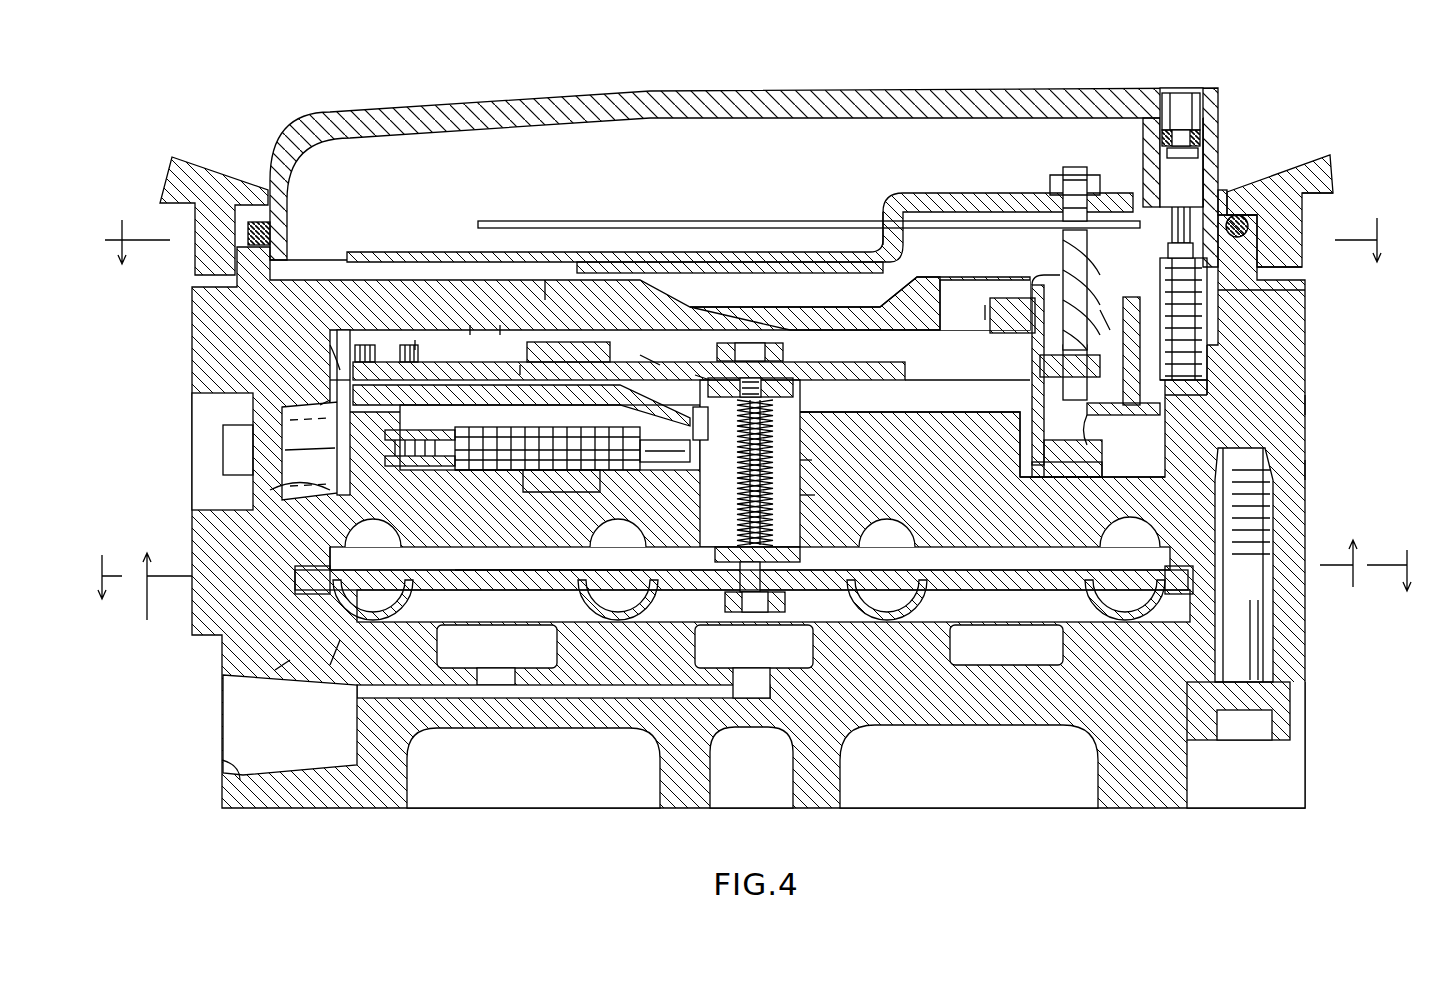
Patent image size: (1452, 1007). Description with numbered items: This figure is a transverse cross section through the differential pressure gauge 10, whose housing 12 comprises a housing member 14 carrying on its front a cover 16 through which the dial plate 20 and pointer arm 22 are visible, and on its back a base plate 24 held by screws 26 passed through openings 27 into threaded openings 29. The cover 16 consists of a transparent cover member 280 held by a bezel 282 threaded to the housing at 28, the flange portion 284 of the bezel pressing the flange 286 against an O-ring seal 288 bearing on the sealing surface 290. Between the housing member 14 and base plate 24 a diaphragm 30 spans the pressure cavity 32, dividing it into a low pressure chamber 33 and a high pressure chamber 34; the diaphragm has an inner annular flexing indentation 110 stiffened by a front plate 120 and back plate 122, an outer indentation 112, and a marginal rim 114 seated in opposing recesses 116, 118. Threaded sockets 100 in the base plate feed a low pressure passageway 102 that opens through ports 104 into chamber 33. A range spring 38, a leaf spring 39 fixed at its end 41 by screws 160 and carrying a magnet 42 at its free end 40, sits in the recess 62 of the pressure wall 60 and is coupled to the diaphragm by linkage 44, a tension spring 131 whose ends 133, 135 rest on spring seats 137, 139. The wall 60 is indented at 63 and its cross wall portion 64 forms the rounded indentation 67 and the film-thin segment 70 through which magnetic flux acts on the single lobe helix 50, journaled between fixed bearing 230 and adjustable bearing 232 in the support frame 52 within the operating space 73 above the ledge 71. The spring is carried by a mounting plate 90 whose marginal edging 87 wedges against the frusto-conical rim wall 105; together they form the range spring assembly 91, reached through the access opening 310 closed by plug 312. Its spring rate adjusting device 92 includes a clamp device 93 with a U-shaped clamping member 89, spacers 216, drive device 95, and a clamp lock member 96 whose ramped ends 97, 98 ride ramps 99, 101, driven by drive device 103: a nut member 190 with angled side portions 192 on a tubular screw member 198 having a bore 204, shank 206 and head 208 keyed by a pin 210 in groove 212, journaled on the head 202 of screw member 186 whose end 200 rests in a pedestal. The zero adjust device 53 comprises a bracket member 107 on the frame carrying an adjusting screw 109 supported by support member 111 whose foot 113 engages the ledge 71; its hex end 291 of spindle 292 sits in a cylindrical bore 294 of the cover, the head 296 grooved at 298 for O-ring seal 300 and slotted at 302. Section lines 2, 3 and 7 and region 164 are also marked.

The differential pressure gauge 10 is at (1300, 810).
The housing 12 is at (1308, 470).
The housing member 14 is at (1308, 405).
The cover 16 is at (1340, 175).
The dial plate 20 is at (590, 221).
The pointer arm 22 is at (640, 252).
The base plate 24 is at (1300, 690).
The screws 26 is at (1255, 616).
The openings 27 is at (1265, 640).
The threaded securement location 28 is at (225, 262).
The threaded openings 29 is at (1265, 530).
The diaphragm 30 is at (975, 582).
The pressure cavity 32 is at (1022, 625).
The low pressure chamber 33 is at (870, 632).
The high pressure chamber 34 is at (820, 380).
The range spring 38 is at (470, 330).
The leaf spring 39 is at (640, 370).
The free end 40 is at (950, 380).
The mounted end 41 is at (330, 380).
The magnet 42 is at (1000, 330).
The linkage 44 is at (860, 470).
The single lobe helix 50 is at (1060, 270).
The support frame 52 is at (905, 193).
The zero adjust device 53 is at (1215, 360).
The pressure wall 60 is at (555, 295).
The recess 62 is at (500, 330).
The indentation 63 is at (985, 315).
The cross wall portion 64 is at (1020, 420).
The concavely rounded indentation 67 is at (1005, 315).
The pressure wall segment 70 is at (1030, 400).
The recessed ledge 71 is at (1150, 425).
The operating space 73 is at (1195, 395).
The marginal edging 87 is at (343, 510).
The U-shaped clamping member 89 is at (520, 370).
The mounting plate 90 is at (1160, 495).
The range spring assembly 91 is at (415, 345).
The spring rate adjusting device 92 is at (770, 430).
The clamp device 93 is at (585, 345).
The drive device 95 is at (540, 498).
The clamp lock member 96 is at (650, 360).
The ramped end 97 is at (700, 380).
The ramped end 98 is at (340, 370).
The ramp 99 is at (700, 422).
The threaded sockets 100 is at (222, 755).
The ramp 101 is at (360, 395).
The low pressure passageway 102 is at (628, 728).
The drive device 103 is at (330, 552).
The ports 104 is at (748, 660).
The rim wall 105 is at (330, 600).
The bracket member 107 is at (1208, 305).
The adjusting screw 109 is at (1208, 330).
The inner annular flexing indentation 110 is at (648, 604).
The support member 111 is at (1225, 290).
The outer annular flexing indentation 112 is at (335, 672).
The foot 113 is at (1110, 415).
The marginal rim 114 is at (300, 590).
The annular recess 116 is at (305, 580).
The annular recess 118 is at (275, 632).
The front plate 120 is at (497, 655).
The back plate 122 is at (535, 588).
The tension spring 131 is at (800, 460).
The spring end 133 is at (800, 550).
The spring end 135 is at (805, 420).
The spring seat 137 is at (886, 531).
The spring seat 139 is at (800, 388).
The screws 160 is at (320, 405).
The surface 164 is at (815, 495).
The screw member 186 is at (618, 533).
The nut member 190 is at (400, 520).
The angled side portions 192 is at (400, 380).
The screw member 198 is at (420, 468).
The end portion 200 is at (660, 462).
The head portion 202 is at (472, 592).
The bore 204 is at (470, 440).
The externally threaded shank 206 is at (420, 588).
The head portion 208 is at (340, 420).
The pin 210 is at (270, 490).
The annular groove 212 is at (340, 460).
The spacers 216 is at (545, 290).
The fixed bearing 230 is at (1075, 405).
The adjustable bearing 232 is at (1068, 170).
The cover member 280 is at (1005, 90).
The bezel 282 is at (1320, 170).
The flange portion 284 is at (1228, 192).
The flange 286 is at (1250, 210).
The O-ring seal 288 is at (1250, 224).
The sealing surface 290 is at (1262, 272).
The hex shaped end portion 291 is at (1100, 320).
The spindle 292 is at (1230, 160).
The cylindrical bore 294 is at (1195, 115).
The head portion 296 is at (1165, 128).
The groove 298 is at (1172, 160).
The O-ring seal 300 is at (1205, 165).
The slot 302 is at (1182, 93).
The threaded access opening 310 is at (225, 420).
The threaded plug 312 is at (225, 445).
The section line 2 is at (750, 580).
The section line 3 is at (743, 227).
The section line 7 is at (754, 560).